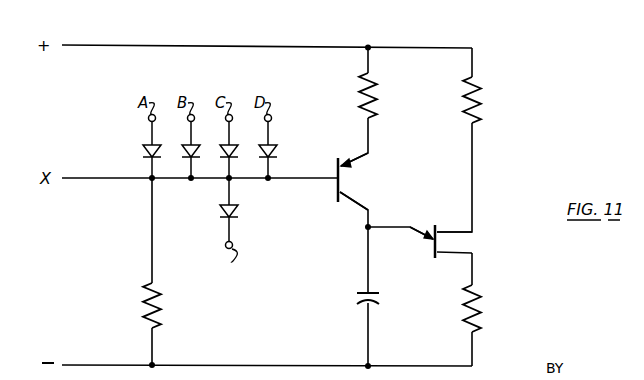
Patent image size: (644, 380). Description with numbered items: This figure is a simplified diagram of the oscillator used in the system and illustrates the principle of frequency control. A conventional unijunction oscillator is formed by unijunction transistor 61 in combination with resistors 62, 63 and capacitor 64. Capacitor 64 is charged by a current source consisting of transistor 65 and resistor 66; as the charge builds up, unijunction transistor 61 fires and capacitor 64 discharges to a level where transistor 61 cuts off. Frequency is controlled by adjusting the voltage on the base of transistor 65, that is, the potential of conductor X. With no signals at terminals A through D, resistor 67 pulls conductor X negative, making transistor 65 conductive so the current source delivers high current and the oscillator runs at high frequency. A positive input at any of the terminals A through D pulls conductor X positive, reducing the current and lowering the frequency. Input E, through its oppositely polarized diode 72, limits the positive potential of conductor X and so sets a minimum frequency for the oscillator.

The unijunction transistor 61 is at (435, 226).
The resistor 62 is at (480, 99).
The resistor 63 is at (481, 300).
The capacitor 64 is at (376, 291).
The transistor 65 is at (337, 199).
The resistor 66 is at (376, 98).
The resistor 67 is at (160, 300).
The diode 72 is at (239, 212).